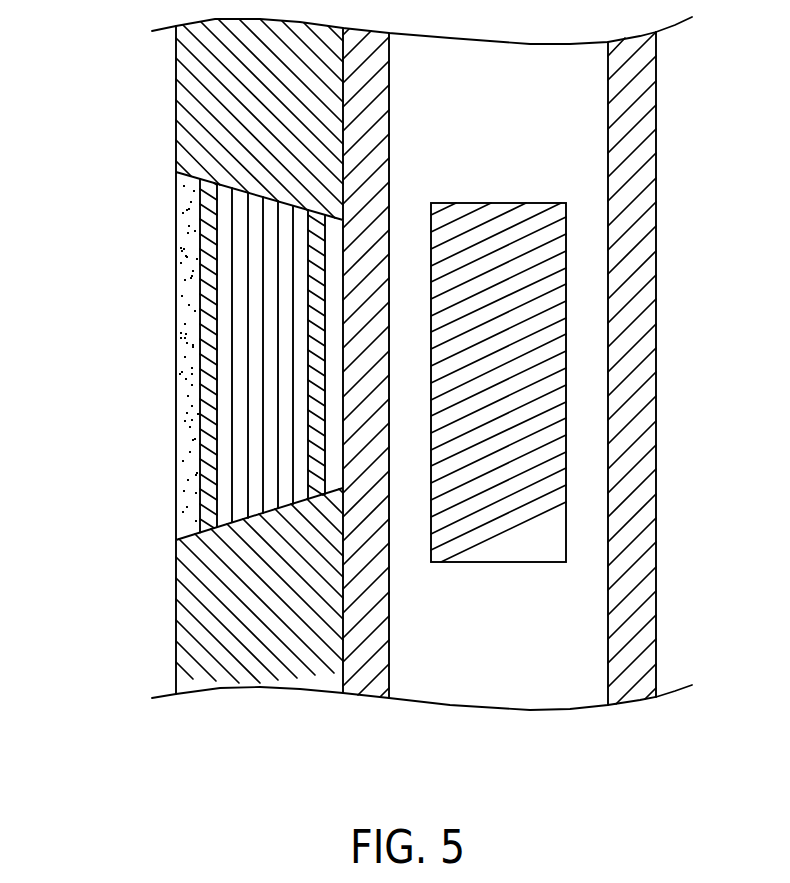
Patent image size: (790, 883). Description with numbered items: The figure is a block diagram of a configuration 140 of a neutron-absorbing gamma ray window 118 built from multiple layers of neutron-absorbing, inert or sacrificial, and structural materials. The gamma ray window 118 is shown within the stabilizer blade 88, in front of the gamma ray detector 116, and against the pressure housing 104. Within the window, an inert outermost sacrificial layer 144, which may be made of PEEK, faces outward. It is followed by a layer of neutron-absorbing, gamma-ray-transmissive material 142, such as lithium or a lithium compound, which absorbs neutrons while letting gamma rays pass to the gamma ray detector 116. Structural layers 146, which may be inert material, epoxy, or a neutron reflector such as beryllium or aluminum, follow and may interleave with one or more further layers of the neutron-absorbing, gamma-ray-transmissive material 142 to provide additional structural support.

The stabilizer blade 88 is at (177, 112).
The pressure housing 104 is at (368, 676).
The gamma ray detector 116 is at (486, 211).
The neutron-absorbing gamma ray window 118 is at (211, 362).
The configuration 140 is at (129, 647).
The neutron-absorbing, gamma-ray-transmissive material 142 is at (317, 407).
The outermost sacrificial layer 144 is at (187, 347).
The structural layers 146 is at (237, 301).